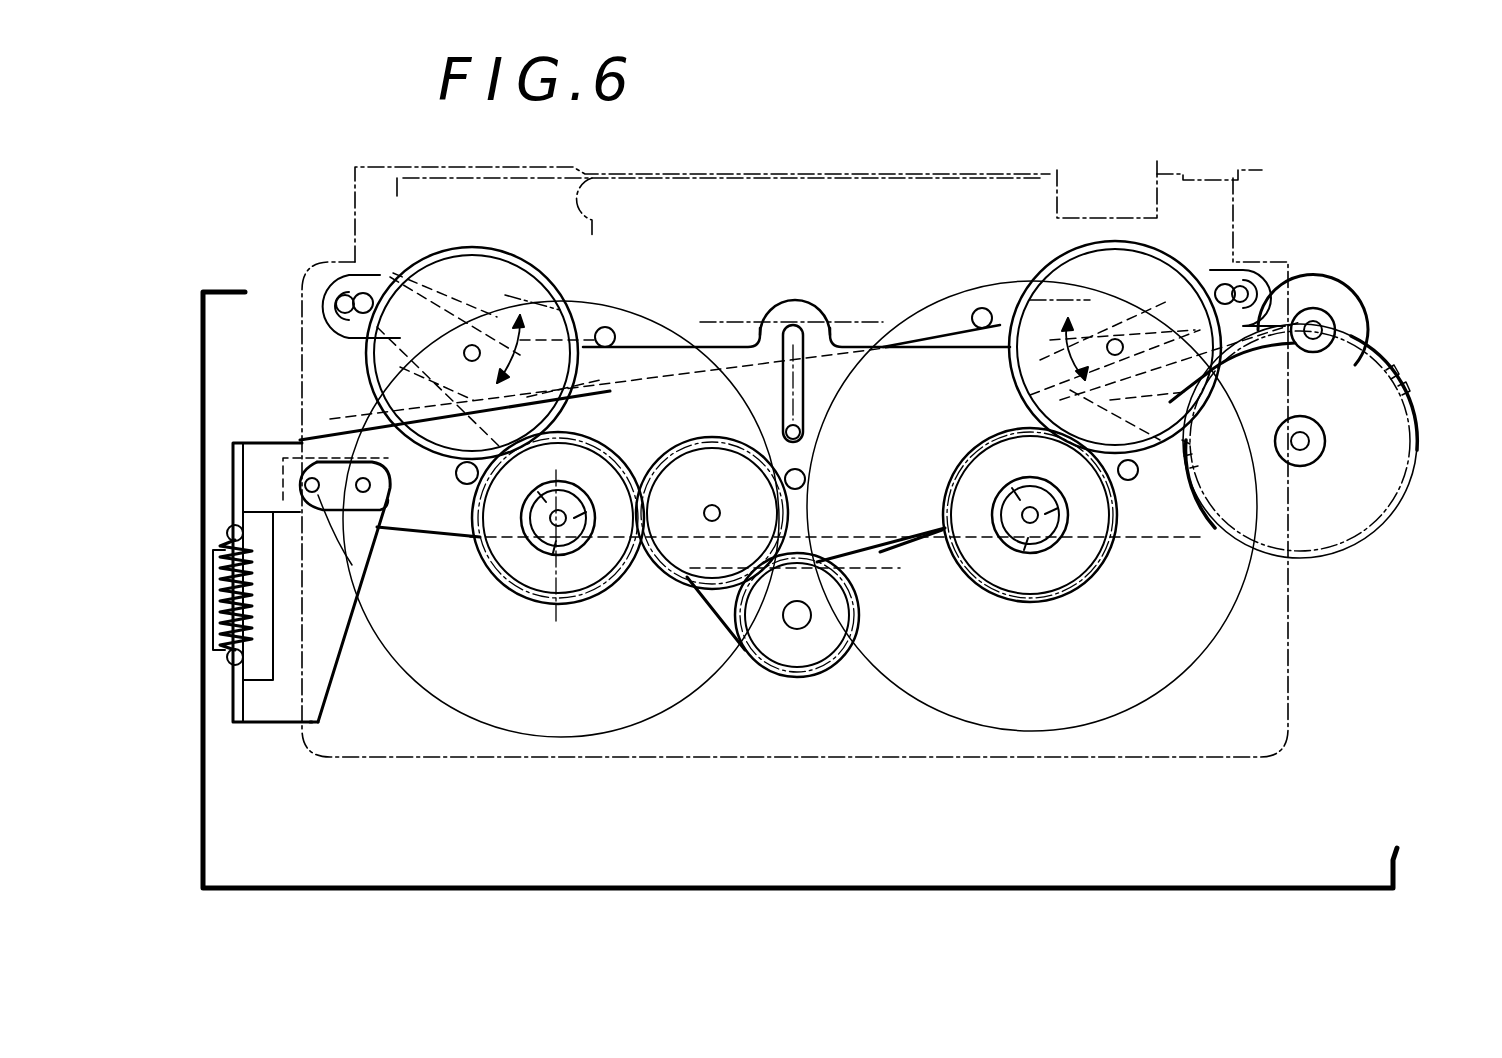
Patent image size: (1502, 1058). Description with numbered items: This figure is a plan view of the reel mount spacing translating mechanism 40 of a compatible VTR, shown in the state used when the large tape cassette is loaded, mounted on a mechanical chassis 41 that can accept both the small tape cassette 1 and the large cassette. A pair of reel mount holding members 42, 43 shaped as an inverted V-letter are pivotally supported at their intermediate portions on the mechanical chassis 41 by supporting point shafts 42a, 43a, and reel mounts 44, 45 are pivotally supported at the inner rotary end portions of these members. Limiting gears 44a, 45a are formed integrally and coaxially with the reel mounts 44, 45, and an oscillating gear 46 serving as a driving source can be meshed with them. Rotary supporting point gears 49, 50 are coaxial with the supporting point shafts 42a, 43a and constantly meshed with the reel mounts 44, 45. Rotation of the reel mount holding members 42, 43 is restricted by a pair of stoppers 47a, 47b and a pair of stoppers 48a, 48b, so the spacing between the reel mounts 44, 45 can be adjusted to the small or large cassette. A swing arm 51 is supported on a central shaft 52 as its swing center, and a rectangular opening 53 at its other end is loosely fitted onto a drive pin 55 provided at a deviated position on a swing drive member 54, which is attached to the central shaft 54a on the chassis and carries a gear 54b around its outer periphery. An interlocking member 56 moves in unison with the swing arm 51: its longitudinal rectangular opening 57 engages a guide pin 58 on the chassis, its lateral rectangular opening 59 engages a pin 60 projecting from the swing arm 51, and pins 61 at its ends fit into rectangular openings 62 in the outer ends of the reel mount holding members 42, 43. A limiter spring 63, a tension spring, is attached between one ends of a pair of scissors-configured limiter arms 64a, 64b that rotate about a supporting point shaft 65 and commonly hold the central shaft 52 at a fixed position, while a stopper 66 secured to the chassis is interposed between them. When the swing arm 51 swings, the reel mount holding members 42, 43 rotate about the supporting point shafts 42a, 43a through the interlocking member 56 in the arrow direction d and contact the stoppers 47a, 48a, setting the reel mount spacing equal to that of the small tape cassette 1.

The small tape cassette 1 is at (1288, 708).
The reel mount spacing translating mechanism 40 is at (978, 252).
The mechanical chassis 41 is at (203, 340).
The reel mount holding member 42 is at (557, 600).
The supporting point shaft 42a is at (480, 346).
The reel mount holding member 43 is at (1047, 560).
The supporting point shaft 43a is at (1118, 340).
The reel mount 44 is at (592, 572).
The limiting gear 44a is at (520, 598).
The reel mount 45 is at (1082, 556).
The limiting gear 45a is at (990, 592).
The oscillating gear 46 is at (672, 582).
The stopper 47a is at (465, 486).
The stopper 47b is at (606, 326).
The stopper 48a is at (1132, 482).
The stopper 48b is at (980, 306).
The rotary supporting point gear 49 is at (478, 250).
The rotary supporting point gear 50 is at (1175, 262).
The swing arm 51 is at (1370, 330).
The central shaft 52 is at (348, 610).
The rectangular opening 53 is at (1290, 290).
The swing drive member 54 is at (1380, 478).
The central shaft 54a is at (1310, 441).
The gear 54b is at (1378, 522).
The drive pin 55 is at (1336, 318).
The interlocking member 56 is at (680, 345).
The longitudinal rectangular opening 57 is at (770, 428).
The guide pin 58 is at (790, 432).
The lateral rectangular opening 59 is at (800, 488).
The pin 60 is at (810, 474).
The pin 61 is at (358, 300).
The rectangular opening 62 is at (352, 290).
The limiter spring 63 is at (218, 590).
The limiter arm 64a is at (240, 478).
The limiter arm 64b is at (318, 700).
The supporting point shaft 65 is at (368, 525).
The stopper 66 is at (228, 650).